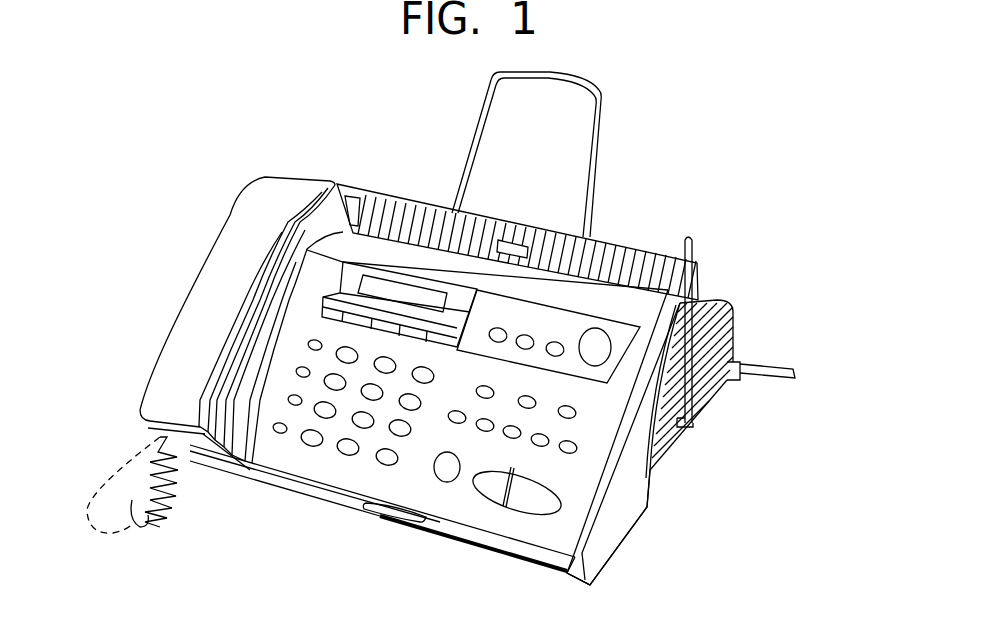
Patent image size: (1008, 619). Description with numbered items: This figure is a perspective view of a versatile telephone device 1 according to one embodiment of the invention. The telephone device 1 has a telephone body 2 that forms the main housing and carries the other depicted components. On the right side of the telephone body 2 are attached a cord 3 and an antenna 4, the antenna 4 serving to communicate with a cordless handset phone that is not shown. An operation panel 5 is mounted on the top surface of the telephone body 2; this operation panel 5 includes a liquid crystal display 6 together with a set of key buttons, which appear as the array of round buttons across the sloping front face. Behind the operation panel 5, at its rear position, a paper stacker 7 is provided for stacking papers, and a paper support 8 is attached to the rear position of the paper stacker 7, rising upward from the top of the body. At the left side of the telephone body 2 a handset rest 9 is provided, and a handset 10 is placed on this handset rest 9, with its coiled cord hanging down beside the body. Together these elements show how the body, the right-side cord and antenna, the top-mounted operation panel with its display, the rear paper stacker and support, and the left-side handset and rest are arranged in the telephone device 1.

The telephone device 1 is at (685, 207).
The telephone body 2 is at (703, 297).
The cord 3 is at (758, 360).
The antenna 4 is at (688, 382).
The operation panel 5 is at (582, 502).
The liquid crystal display 6 is at (370, 279).
The paper stacker 7 is at (600, 247).
The paper support 8 is at (602, 118).
The handset rest 9 is at (236, 415).
The handset 10 is at (203, 310).